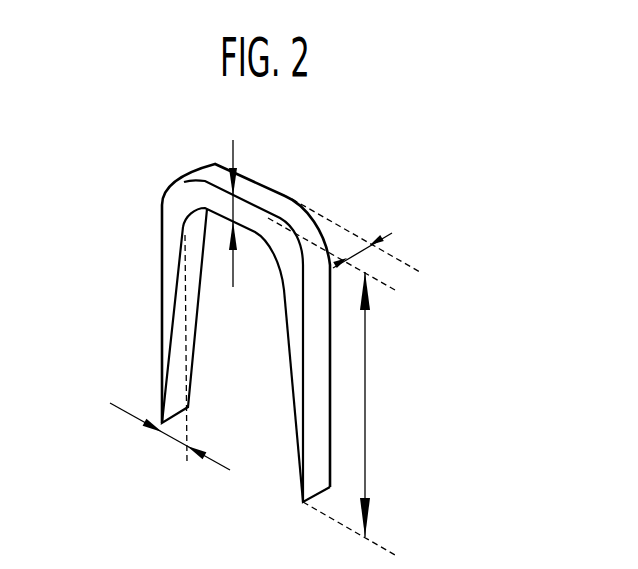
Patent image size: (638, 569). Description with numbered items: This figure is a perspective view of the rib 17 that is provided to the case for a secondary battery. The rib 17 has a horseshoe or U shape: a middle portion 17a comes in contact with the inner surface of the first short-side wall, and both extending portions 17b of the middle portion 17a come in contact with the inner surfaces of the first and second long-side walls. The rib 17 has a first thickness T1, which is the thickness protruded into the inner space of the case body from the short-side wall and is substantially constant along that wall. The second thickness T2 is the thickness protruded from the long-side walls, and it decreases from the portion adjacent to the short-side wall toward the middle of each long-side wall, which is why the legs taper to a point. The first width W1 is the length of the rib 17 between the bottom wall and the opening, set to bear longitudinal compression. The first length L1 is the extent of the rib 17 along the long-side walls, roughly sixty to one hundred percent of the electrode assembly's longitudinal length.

The rib 17 is at (258, 293).
The middle portion 17a is at (274, 203).
The leg portion of clip 17b is at (317, 353).
The first thickness T1 is at (233, 212).
The first width W1 is at (357, 253).
The first length L1 is at (349, 413).
The second thickness T2 is at (170, 442).